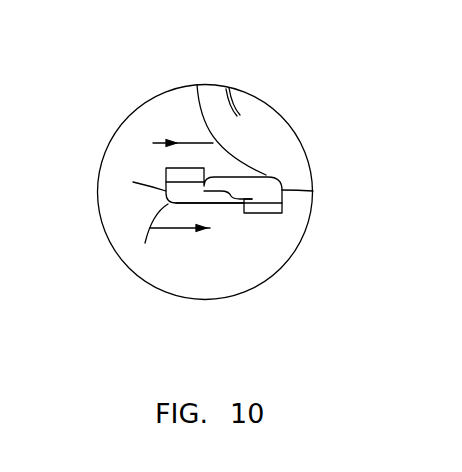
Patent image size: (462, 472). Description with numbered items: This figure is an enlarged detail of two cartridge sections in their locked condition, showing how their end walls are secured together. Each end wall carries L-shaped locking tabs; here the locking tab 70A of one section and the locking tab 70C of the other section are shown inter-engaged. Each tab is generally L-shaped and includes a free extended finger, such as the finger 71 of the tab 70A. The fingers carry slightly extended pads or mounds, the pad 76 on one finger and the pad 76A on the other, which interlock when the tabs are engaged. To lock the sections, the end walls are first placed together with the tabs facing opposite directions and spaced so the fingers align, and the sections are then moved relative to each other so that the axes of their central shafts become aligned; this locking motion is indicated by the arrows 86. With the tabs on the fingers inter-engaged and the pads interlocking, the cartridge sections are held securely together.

The locking tab 70A is at (197, 161).
The locking tab 70C is at (285, 212).
The free extended finger 71 is at (207, 207).
The pad 76 is at (246, 207).
The pad 76A is at (222, 190).
The arrows 86 is at (168, 135).